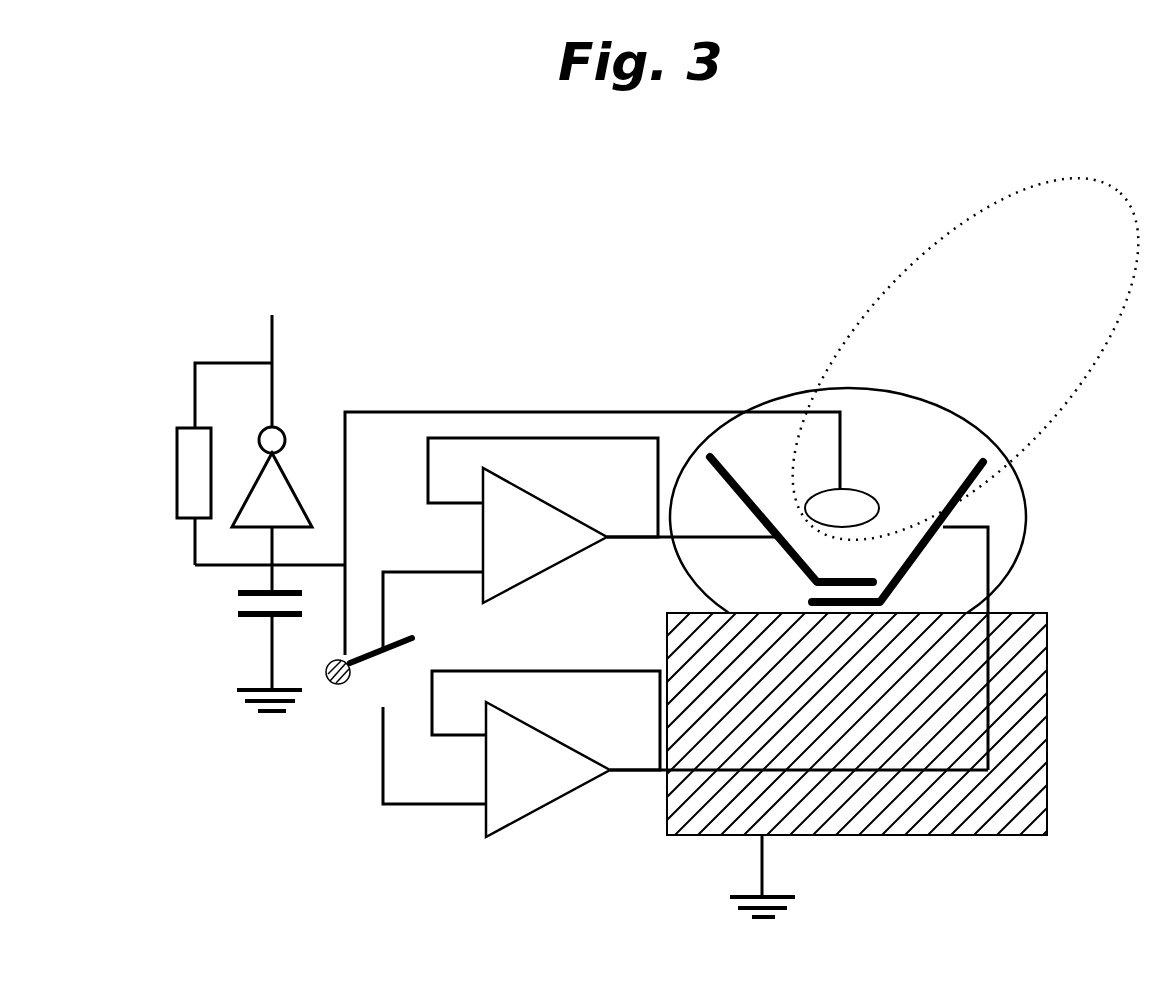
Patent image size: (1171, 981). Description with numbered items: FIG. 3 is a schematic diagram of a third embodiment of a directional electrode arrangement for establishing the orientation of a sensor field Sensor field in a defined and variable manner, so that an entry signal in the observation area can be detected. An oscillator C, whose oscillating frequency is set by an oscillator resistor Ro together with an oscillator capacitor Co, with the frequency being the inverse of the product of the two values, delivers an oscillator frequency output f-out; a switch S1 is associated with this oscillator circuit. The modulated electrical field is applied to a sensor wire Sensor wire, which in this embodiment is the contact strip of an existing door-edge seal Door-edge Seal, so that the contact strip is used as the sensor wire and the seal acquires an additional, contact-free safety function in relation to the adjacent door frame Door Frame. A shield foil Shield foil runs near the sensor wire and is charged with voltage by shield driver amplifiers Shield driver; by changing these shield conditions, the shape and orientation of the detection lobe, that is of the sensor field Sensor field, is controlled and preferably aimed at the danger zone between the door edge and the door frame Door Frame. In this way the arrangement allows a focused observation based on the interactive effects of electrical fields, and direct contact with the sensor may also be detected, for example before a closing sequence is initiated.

The oscillator frequency output f-out is at (259, 356).
The oscillator (fout=1/(Ro*Co)) C is at (220, 432).
The oscillator resistor Ro is at (179, 496).
The oscillator capacitor Co is at (249, 638).
The switch S1 is at (369, 663).
The shield driver amplifiers Shield driver is at (685, 637).
The shield foil Shield foil is at (752, 558).
The sensor wire Sensor wire is at (866, 501).
The sensor field Sensor field is at (952, 358).
The door-edge seal Door-edge Seal is at (1025, 579).
The door frame Door Frame is at (808, 765).